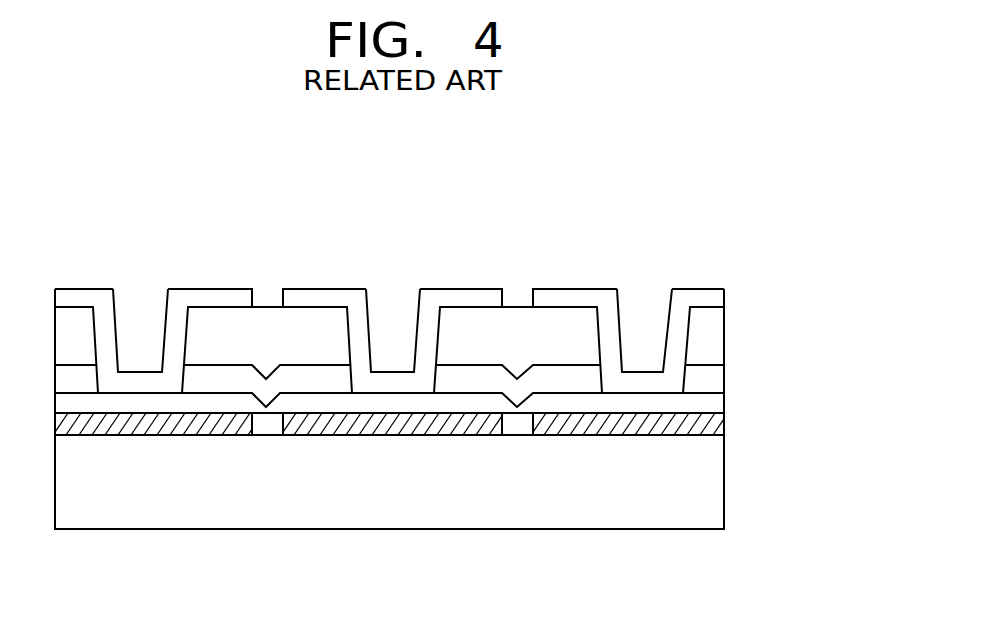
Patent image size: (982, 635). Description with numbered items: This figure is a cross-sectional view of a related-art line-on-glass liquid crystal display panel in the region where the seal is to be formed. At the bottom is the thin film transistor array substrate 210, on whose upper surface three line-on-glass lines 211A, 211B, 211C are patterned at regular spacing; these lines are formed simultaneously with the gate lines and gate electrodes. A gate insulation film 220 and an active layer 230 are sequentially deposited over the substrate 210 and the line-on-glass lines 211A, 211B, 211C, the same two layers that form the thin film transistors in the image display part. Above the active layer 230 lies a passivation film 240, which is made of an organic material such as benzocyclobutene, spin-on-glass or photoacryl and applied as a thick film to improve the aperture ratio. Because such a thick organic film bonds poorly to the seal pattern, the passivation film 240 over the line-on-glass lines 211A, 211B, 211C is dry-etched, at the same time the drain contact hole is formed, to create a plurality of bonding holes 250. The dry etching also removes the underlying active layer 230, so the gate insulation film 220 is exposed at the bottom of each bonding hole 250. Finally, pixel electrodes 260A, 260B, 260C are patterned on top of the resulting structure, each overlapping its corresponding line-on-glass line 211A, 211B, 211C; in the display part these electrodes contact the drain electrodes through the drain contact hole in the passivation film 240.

The thin film transistor array substrate 210 is at (713, 477).
The line-on-glass line 211A is at (153, 435).
The line-on-glass line 211B is at (397, 435).
The line-on-glass line 211C is at (642, 435).
The gate insulation film 220 is at (713, 407).
The active layer 230 is at (713, 380).
The passivation film 240 is at (713, 342).
The bonding hole 250 is at (136, 324).
The pixel electrode 260A is at (207, 298).
The pixel electrode 260B is at (467, 298).
The pixel electrode 260C is at (704, 300).